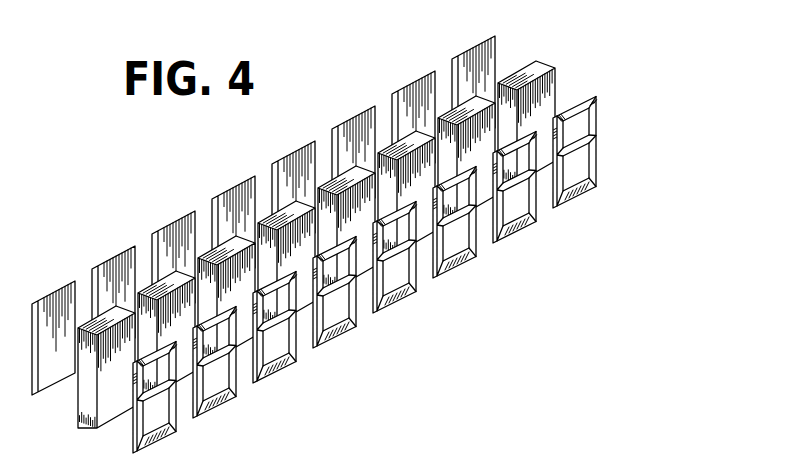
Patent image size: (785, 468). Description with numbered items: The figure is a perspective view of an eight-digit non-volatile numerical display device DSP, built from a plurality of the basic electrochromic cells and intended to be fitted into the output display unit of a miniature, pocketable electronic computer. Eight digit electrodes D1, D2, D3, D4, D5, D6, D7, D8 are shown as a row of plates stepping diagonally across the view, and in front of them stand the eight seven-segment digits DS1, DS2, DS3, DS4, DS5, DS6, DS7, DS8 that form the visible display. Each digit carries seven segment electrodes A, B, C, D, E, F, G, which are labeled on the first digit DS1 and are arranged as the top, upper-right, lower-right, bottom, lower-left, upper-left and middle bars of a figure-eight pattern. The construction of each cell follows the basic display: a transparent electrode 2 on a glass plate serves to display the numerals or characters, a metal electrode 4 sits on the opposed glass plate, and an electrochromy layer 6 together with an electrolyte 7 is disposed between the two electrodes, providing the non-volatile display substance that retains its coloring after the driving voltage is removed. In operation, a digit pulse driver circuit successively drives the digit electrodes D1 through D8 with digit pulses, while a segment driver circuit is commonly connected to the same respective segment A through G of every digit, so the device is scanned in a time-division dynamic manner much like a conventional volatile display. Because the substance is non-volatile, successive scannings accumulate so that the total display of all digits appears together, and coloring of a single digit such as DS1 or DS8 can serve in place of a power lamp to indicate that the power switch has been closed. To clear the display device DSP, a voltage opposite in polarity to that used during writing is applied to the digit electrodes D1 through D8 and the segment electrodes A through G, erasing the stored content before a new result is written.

The transparent electrode 2 is at (602, 150).
The metal electrode 4 is at (500, 47).
The electrochromy layer 6 is at (552, 110).
The electrolyte 7 is at (542, 66).
The digit electrode D1 is at (55, 292).
The digit electrode D2 is at (115, 257).
The digit electrode D3 is at (175, 222).
The digit electrode D4 is at (235, 187).
The digit electrode D5 is at (295, 152).
The digit electrode D6 is at (355, 118).
The digit electrode D7 is at (415, 82).
The digit electrode D8 is at (489, 77).
The numerical display device DSP is at (327, 70).
The digit DS1 is at (151, 383).
The digit DS2 is at (241, 447).
The digit DS3 is at (299, 416).
The digit DS4 is at (359, 379).
The digit DS5 is at (418, 344).
The digit DS6 is at (480, 310).
The digit DS7 is at (541, 275).
The digit DS8 is at (596, 170).
The segment electrode A is at (180, 348).
The segment electrode B is at (168, 412).
The segment electrode C is at (162, 437).
The segment electrode D is at (169, 392).
The segment electrode E is at (133, 383).
The segment electrode F is at (142, 356).
The segment electrode G is at (133, 433).